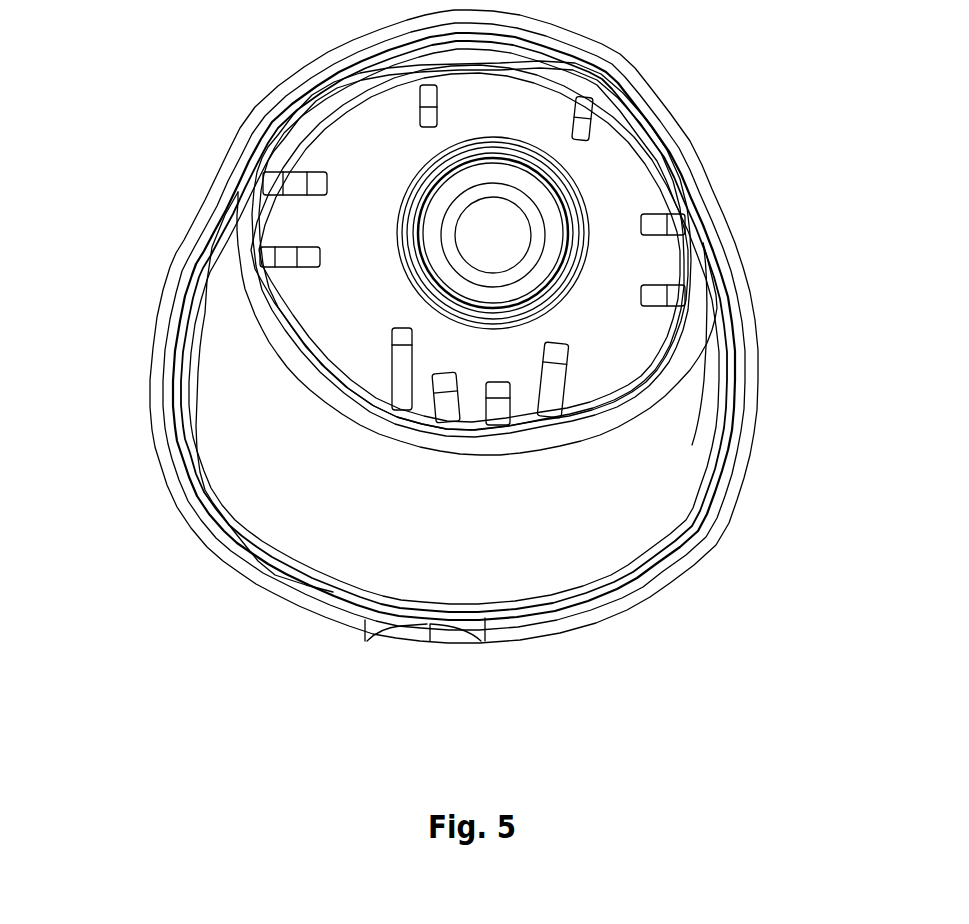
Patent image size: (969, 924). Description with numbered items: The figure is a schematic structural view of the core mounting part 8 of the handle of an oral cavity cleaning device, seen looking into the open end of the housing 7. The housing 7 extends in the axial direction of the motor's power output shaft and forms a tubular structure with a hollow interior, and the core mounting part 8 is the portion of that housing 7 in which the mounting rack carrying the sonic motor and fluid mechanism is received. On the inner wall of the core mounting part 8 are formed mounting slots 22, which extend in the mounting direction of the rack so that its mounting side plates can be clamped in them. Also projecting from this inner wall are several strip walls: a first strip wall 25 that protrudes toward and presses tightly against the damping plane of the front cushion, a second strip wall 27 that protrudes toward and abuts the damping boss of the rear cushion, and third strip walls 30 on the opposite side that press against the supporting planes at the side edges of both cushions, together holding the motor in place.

The housing 7 is at (535, 630).
The core mounting part 8 is at (650, 352).
The mounting slots 22 is at (672, 268).
The first strip wall 25 is at (400, 328).
The second strip wall 27 is at (523, 427).
The third strip walls 30 is at (425, 118).